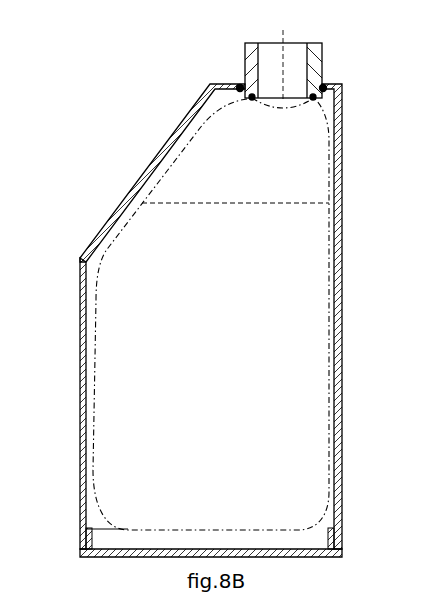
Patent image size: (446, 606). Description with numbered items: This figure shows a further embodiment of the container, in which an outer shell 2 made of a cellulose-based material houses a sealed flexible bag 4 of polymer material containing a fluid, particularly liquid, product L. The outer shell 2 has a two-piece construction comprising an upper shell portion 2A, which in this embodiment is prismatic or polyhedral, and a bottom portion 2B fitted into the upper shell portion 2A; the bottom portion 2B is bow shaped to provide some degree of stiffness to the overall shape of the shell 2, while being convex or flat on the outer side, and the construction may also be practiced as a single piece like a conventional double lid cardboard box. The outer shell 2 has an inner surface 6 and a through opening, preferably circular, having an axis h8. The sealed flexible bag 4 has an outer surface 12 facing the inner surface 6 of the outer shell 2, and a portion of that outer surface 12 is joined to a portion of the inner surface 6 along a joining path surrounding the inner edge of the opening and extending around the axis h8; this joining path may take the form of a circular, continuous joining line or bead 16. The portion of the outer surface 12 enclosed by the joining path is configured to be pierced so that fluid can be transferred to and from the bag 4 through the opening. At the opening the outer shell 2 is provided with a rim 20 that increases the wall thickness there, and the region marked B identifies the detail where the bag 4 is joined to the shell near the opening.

The outer shell 2 is at (234, 330).
The upper shell portion 2A is at (343, 402).
The bottom portion 2B is at (300, 557).
The sealed flexible bag 4 is at (100, 262).
The inner surface 6 is at (160, 158).
The outer surface 12 is at (90, 382).
The joining line or bead 16 is at (252, 100).
The rim 20 is at (320, 65).
The detail region B is at (238, 85).
The axis h8 is at (283, 34).
The product L is at (235, 288).